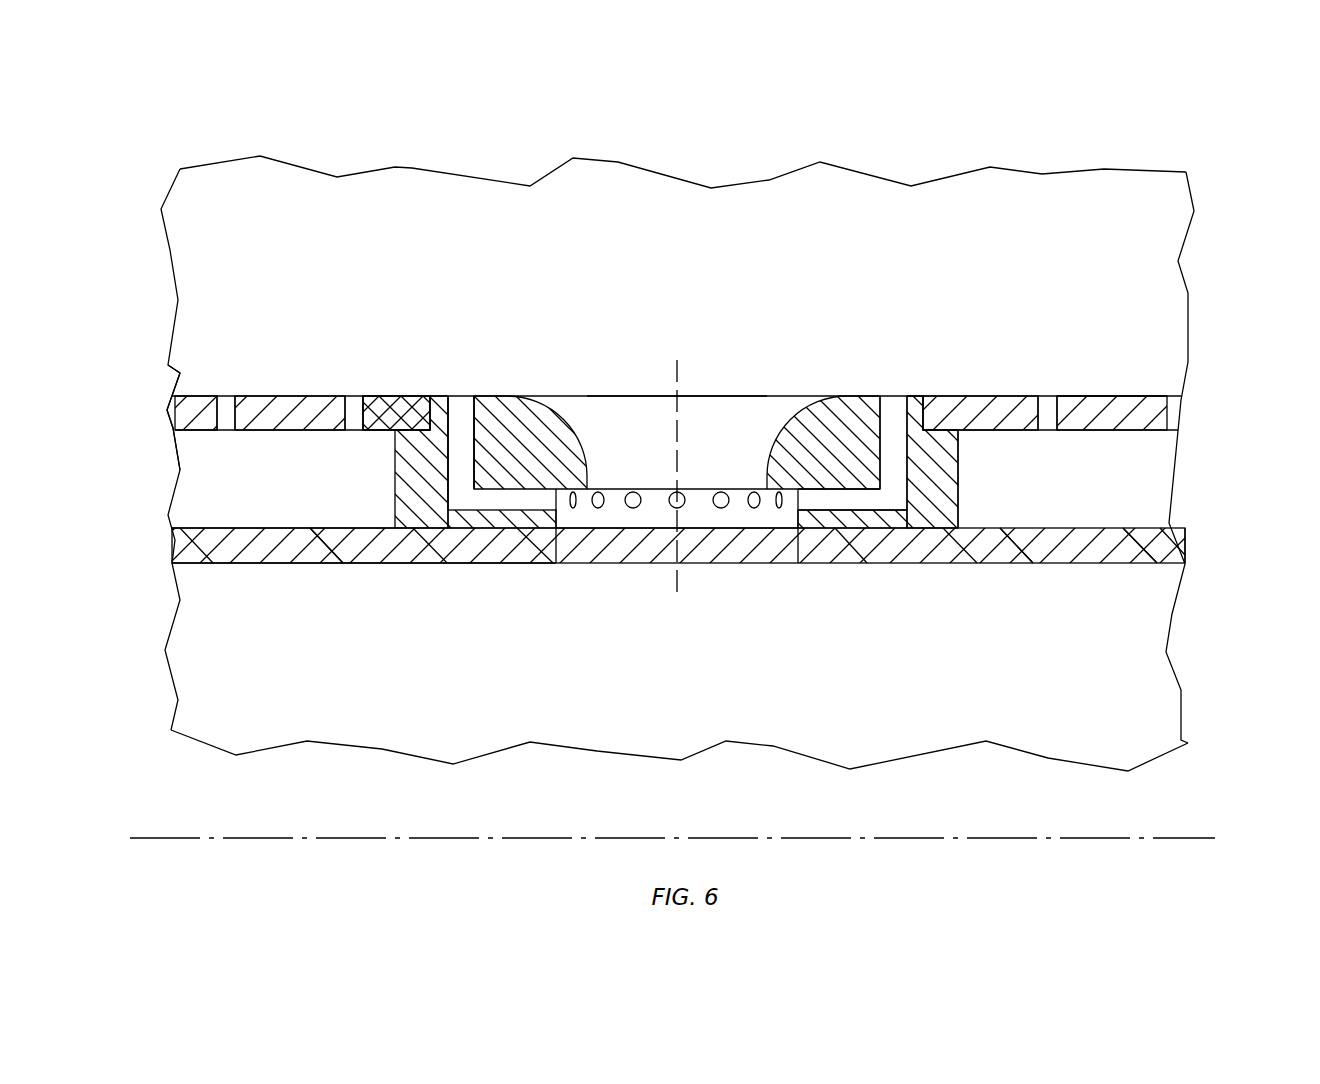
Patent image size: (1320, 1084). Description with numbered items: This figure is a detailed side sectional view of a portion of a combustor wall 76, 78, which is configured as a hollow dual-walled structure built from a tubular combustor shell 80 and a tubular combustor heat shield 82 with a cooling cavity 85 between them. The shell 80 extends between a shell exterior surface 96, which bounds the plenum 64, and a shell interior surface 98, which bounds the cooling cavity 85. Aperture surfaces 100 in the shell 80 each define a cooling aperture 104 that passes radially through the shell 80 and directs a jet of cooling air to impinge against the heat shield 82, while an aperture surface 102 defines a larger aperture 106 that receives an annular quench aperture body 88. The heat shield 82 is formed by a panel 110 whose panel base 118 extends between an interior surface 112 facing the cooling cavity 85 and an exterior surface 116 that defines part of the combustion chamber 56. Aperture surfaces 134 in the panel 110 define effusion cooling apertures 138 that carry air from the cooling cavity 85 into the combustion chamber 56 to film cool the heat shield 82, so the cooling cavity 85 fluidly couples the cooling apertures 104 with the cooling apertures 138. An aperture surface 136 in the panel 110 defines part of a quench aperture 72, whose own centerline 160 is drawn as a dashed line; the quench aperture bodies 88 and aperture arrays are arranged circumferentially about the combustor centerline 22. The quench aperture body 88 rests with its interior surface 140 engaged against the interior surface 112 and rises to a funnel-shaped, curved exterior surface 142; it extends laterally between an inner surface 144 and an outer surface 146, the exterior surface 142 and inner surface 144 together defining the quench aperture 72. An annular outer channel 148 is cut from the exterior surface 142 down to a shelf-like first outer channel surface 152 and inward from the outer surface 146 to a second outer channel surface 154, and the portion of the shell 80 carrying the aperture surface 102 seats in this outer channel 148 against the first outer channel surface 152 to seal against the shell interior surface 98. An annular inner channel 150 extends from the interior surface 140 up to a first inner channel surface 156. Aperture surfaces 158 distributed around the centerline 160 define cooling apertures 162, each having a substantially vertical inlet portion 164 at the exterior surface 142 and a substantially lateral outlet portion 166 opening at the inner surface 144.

The centerline 22 is at (1212, 831).
The combustion chamber 56 is at (658, 733).
The plenum 64 is at (690, 236).
The quench aperture 72 is at (718, 420).
The combustor wall 76 is at (733, 410).
The combustor wall 78 is at (1207, 165).
The combustor shell 80 is at (1107, 382).
The combustor heat shield 82 is at (678, 595).
The cooling cavity 85 is at (206, 501).
The quench aperture body 88 is at (830, 382).
The shell exterior surface 96 is at (197, 396).
The shell interior surface 98 is at (180, 437).
The aperture surface 100 is at (228, 417).
The aperture surface 102 is at (462, 412).
The cooling aperture 104 is at (350, 432).
The aperture 106 is at (933, 405).
The panel 110 is at (1078, 578).
The interior surface 112 is at (178, 520).
The exterior surface 116 is at (232, 565).
The panel base 118 is at (1183, 548).
The aperture surface 134 is at (318, 565).
The aperture surface 136 is at (558, 545).
The cooling aperture 138 is at (300, 528).
The interior surface 140 is at (446, 530).
The exterior surface 142 is at (480, 396).
The inner surface 144 is at (792, 530).
The outer surface 146 is at (958, 458).
The outer channel 148 is at (958, 416).
The inner channel 150 is at (770, 522).
The first outer channel surface 152 is at (390, 410).
The second outer channel surface 154 is at (422, 413).
The first inner channel surface 156 is at (587, 489).
The aperture surface 158 is at (512, 515).
The centerline 160 is at (675, 362).
The cooling aperture 162 is at (462, 396).
The inlet portion 164 is at (900, 452).
The outlet portion 166 is at (842, 502).